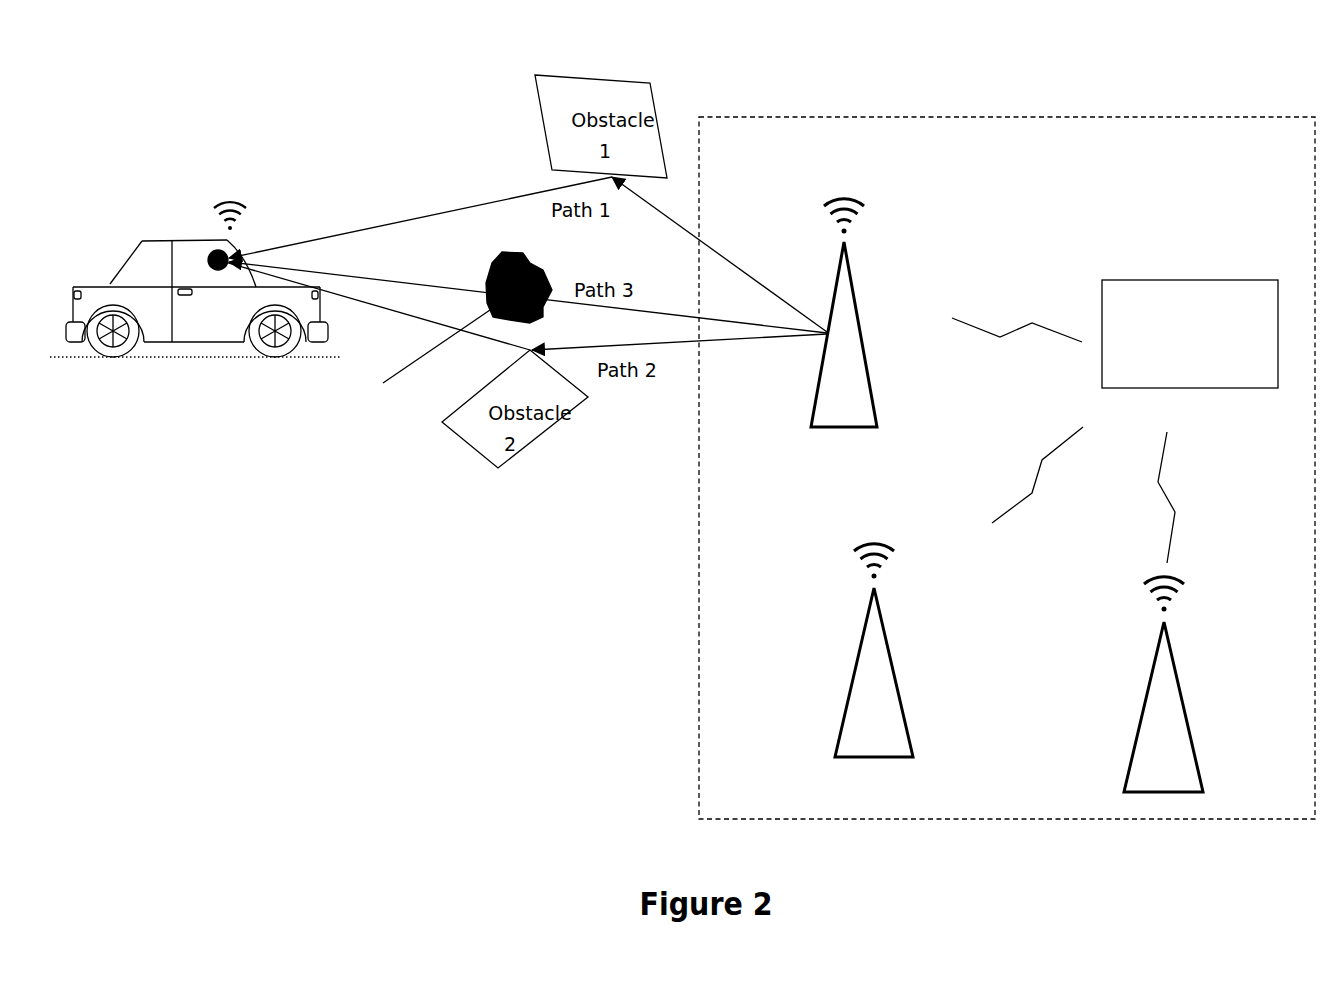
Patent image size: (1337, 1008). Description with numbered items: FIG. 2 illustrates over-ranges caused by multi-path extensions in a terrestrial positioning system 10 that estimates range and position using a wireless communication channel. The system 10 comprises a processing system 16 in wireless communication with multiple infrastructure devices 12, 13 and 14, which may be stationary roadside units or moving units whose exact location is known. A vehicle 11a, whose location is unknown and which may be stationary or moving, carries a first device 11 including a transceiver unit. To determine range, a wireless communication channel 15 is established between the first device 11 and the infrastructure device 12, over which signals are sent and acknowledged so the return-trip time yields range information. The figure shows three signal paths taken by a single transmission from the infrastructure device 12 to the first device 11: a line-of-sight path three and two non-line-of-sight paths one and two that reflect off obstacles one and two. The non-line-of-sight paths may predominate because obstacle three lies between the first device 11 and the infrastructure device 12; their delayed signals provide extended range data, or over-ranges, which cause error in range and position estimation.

The terrestrial positioning system 10 is at (1155, 88).
The first device 11 is at (207, 253).
The vehicle 11a is at (162, 320).
The infrastructure device 12 is at (863, 333).
The infrastructure device 13 is at (895, 672).
The infrastructure device 14 is at (1192, 708).
The wireless communication channel 15 is at (447, 341).
The processing system 16 is at (1115, 421).